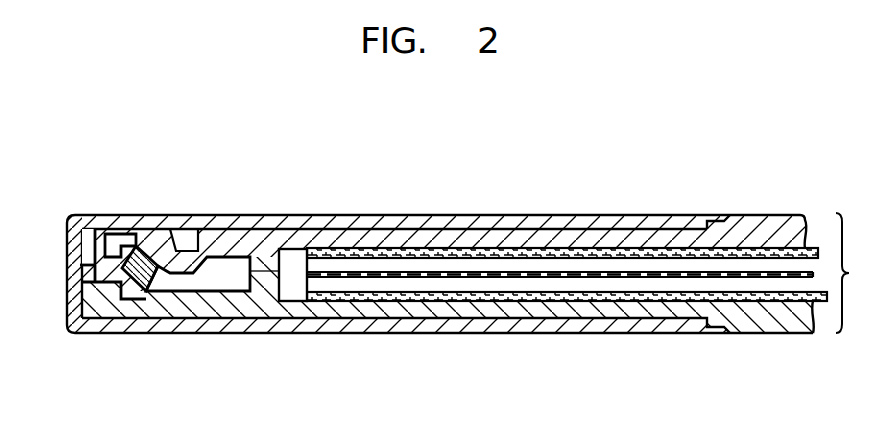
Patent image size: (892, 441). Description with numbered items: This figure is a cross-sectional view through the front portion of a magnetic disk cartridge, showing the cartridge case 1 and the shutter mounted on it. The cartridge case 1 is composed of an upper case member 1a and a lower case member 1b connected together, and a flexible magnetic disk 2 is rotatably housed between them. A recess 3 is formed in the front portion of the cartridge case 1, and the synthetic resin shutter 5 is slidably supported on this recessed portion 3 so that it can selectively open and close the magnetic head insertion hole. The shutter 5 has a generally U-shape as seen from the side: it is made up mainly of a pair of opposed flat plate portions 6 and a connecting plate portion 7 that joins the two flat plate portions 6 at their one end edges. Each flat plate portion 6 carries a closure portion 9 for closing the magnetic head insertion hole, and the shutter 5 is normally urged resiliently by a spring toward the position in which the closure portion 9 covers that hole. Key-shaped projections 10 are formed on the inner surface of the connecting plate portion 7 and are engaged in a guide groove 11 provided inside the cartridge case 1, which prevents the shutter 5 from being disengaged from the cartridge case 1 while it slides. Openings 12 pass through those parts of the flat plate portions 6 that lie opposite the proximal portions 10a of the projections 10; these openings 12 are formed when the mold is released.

The cartridge case 1 is at (586, 273).
The upper case member 1a is at (775, 312).
The lower case member 1b is at (767, 230).
The flexible magnetic disk 2 is at (402, 278).
The recess 3 is at (714, 215).
The shutter 5 is at (293, 215).
The flat plate portion 6 is at (553, 228).
The closure portion 9 is at (546, 318).
The connecting plate portion 7 is at (67, 273).
The key-shaped projection 10 is at (139, 283).
The proximal portion 10a is at (95, 263).
The guide groove 11 is at (153, 229).
The opening 12 is at (93, 226).